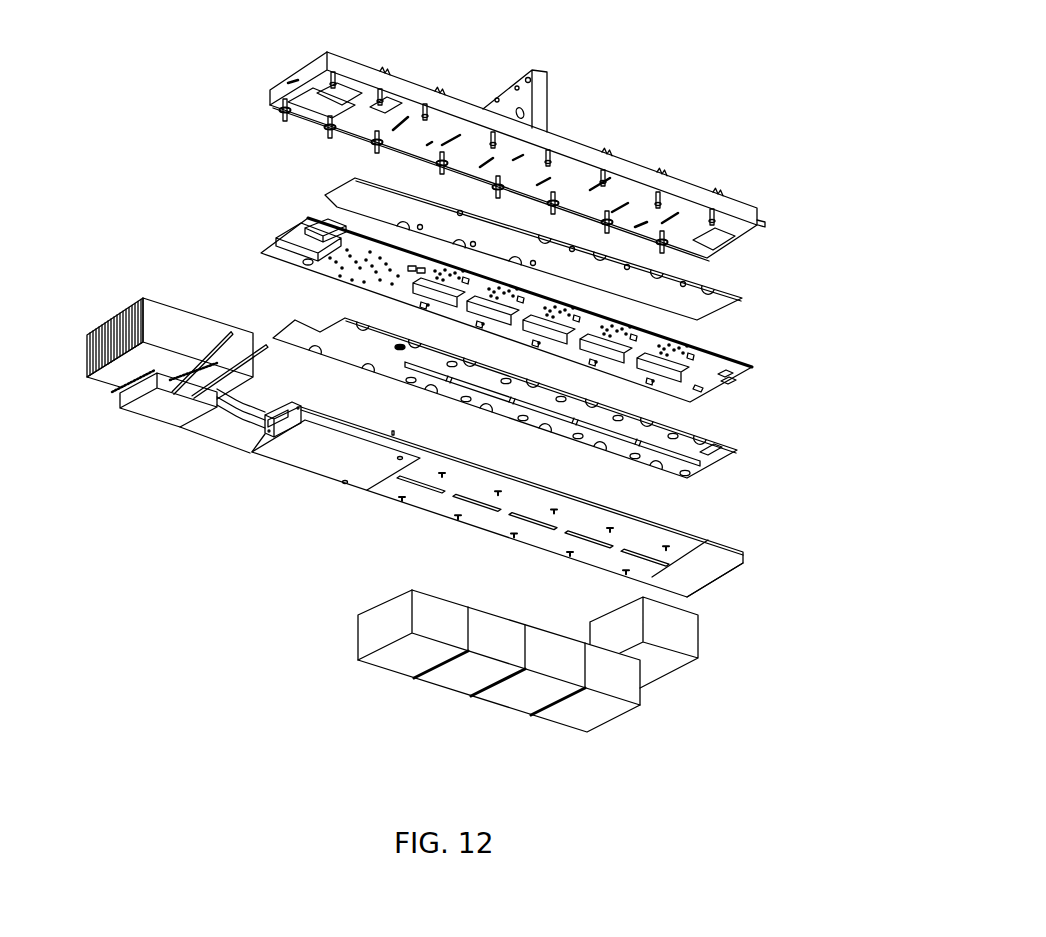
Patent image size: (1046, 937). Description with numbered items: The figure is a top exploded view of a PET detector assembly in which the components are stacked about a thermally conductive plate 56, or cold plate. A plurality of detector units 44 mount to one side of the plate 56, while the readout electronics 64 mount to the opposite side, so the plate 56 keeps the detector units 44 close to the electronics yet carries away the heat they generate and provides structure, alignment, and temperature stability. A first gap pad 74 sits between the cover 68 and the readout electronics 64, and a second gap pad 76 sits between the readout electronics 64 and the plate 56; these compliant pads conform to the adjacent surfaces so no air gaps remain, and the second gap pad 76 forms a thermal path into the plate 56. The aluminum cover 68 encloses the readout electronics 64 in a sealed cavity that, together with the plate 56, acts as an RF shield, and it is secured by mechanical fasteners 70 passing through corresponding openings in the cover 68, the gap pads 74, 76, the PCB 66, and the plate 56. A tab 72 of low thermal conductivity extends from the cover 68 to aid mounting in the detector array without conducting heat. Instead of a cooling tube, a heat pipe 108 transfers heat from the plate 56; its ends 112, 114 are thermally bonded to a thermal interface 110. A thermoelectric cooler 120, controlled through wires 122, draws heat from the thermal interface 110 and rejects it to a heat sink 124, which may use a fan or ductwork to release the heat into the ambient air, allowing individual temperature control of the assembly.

The detector unit 44 is at (675, 672).
The cold plate 56 is at (726, 567).
The readout electronics 64 is at (754, 371).
The PCB 66 is at (752, 366).
The cover 68 is at (746, 211).
The mechanical fastener 70 is at (700, 269).
The tab 72 is at (527, 70).
The first gap pad 74 is at (739, 298).
The second gap pad 76 is at (718, 458).
The heat pipe 108 is at (249, 449).
The thermal interface 110 is at (158, 413).
The end of heat pipe 112 is at (230, 440).
The end of heat pipe 114 is at (210, 416).
The thermoelectric cooler 120 is at (119, 394).
The wires 122 is at (267, 350).
The heat sink 124 is at (86, 341).